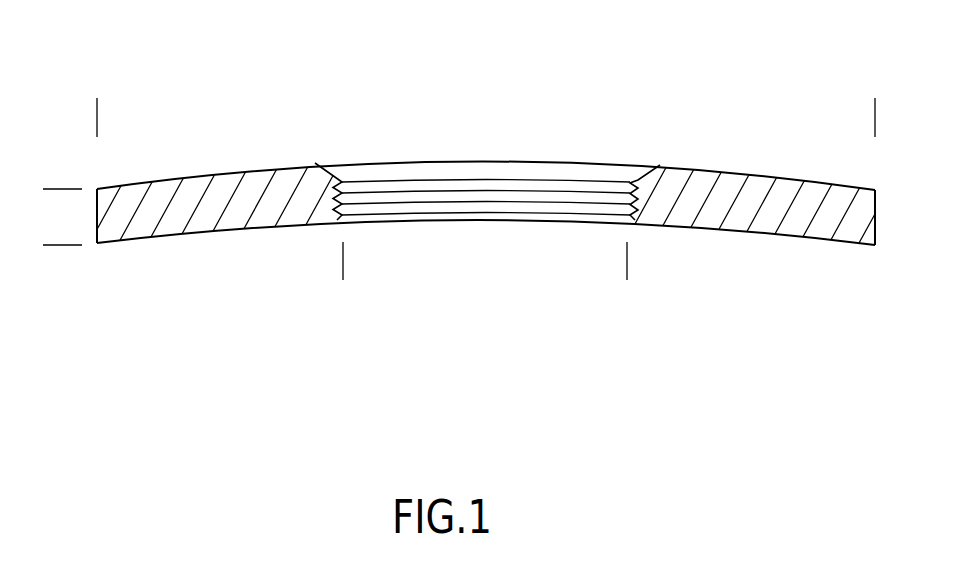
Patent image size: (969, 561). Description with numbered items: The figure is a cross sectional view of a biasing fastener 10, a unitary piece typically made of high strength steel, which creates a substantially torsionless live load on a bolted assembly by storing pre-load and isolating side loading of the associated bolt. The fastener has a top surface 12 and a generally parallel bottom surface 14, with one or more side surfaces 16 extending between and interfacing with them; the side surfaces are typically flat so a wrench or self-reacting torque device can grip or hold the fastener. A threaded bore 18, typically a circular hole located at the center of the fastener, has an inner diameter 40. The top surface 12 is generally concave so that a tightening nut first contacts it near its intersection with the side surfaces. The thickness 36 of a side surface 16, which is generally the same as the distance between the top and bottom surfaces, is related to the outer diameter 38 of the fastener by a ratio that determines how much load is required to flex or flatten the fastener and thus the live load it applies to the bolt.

The biasing fastener 10 is at (806, 90).
The top surface 12 is at (162, 233).
The bottom surface 14 is at (797, 177).
The side surface 16 is at (877, 220).
The threaded bore 18 is at (550, 183).
The thickness 36 is at (62, 270).
The outer diameter 38 is at (874, 118).
The inner diameter 40 is at (344, 262).